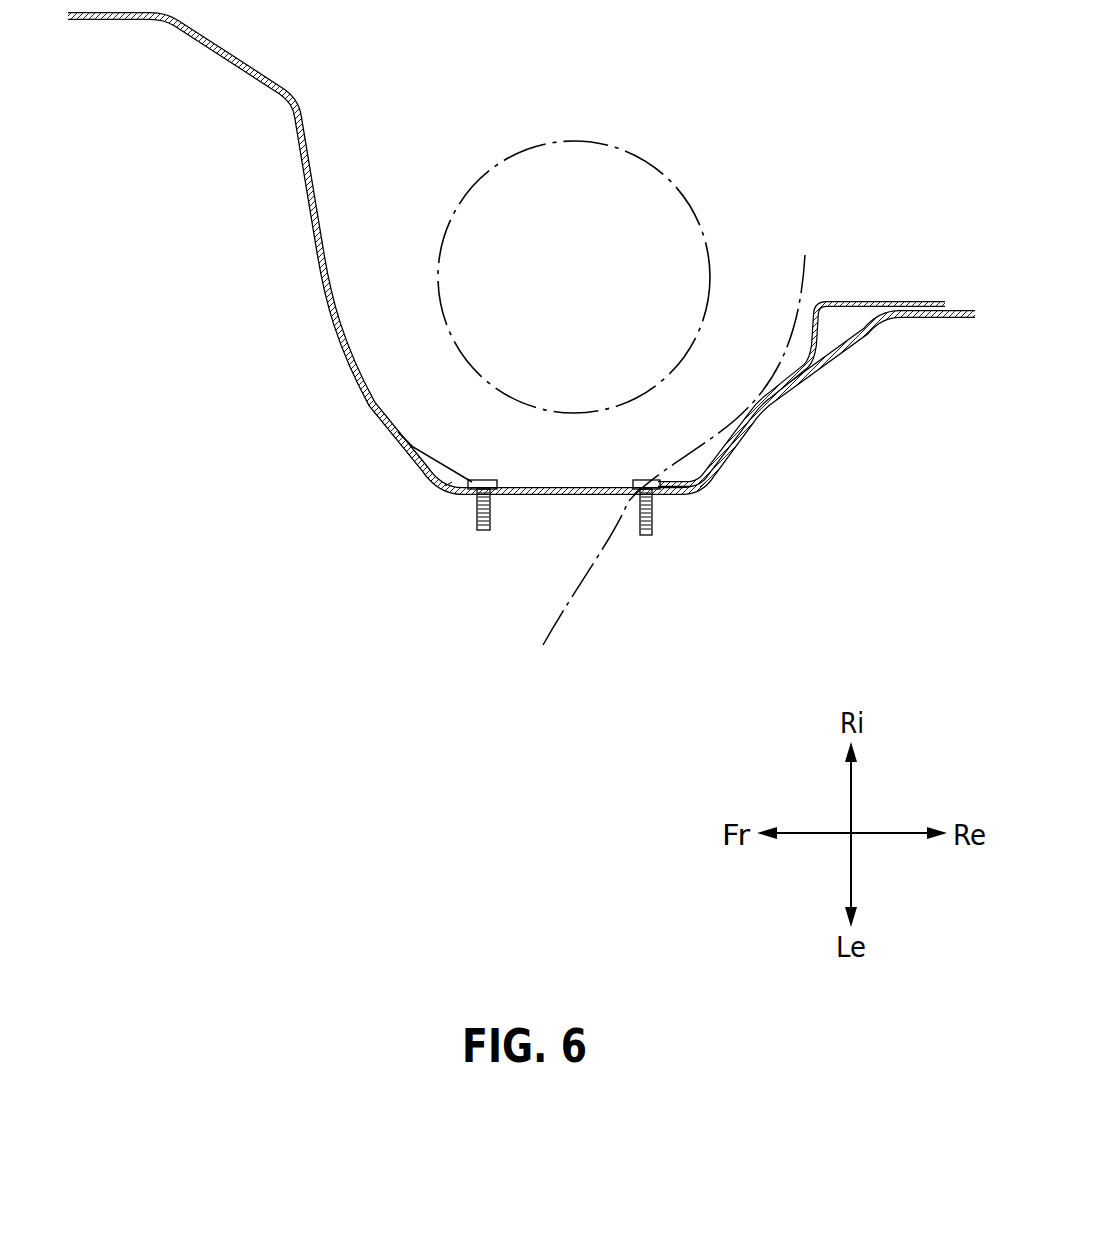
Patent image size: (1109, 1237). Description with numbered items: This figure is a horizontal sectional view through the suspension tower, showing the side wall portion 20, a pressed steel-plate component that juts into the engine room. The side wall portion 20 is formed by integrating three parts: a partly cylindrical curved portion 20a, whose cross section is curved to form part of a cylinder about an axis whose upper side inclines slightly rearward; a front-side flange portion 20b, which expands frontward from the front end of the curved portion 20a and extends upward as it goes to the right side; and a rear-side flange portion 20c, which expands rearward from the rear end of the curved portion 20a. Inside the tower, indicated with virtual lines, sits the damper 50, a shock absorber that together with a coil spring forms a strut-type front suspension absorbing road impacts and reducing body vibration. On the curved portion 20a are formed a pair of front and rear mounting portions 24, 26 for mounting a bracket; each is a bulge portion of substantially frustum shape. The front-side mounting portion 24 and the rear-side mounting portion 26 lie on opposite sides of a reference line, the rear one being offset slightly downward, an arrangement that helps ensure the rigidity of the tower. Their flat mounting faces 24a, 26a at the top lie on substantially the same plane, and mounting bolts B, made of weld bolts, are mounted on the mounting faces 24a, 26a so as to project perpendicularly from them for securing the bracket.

The side wall portion 20 is at (521, 356).
The curved portion 20a is at (543, 497).
The front-side flange portion 20b is at (313, 252).
The rear-side flange portion 20c is at (837, 350).
The front-side mounting portion 24 is at (425, 487).
The mounting face 24a is at (458, 503).
The rear-side mounting portion 26 is at (680, 510).
The mounting face 26a is at (663, 510).
The damper 50 is at (664, 151).
The mounting bolt B is at (478, 500).